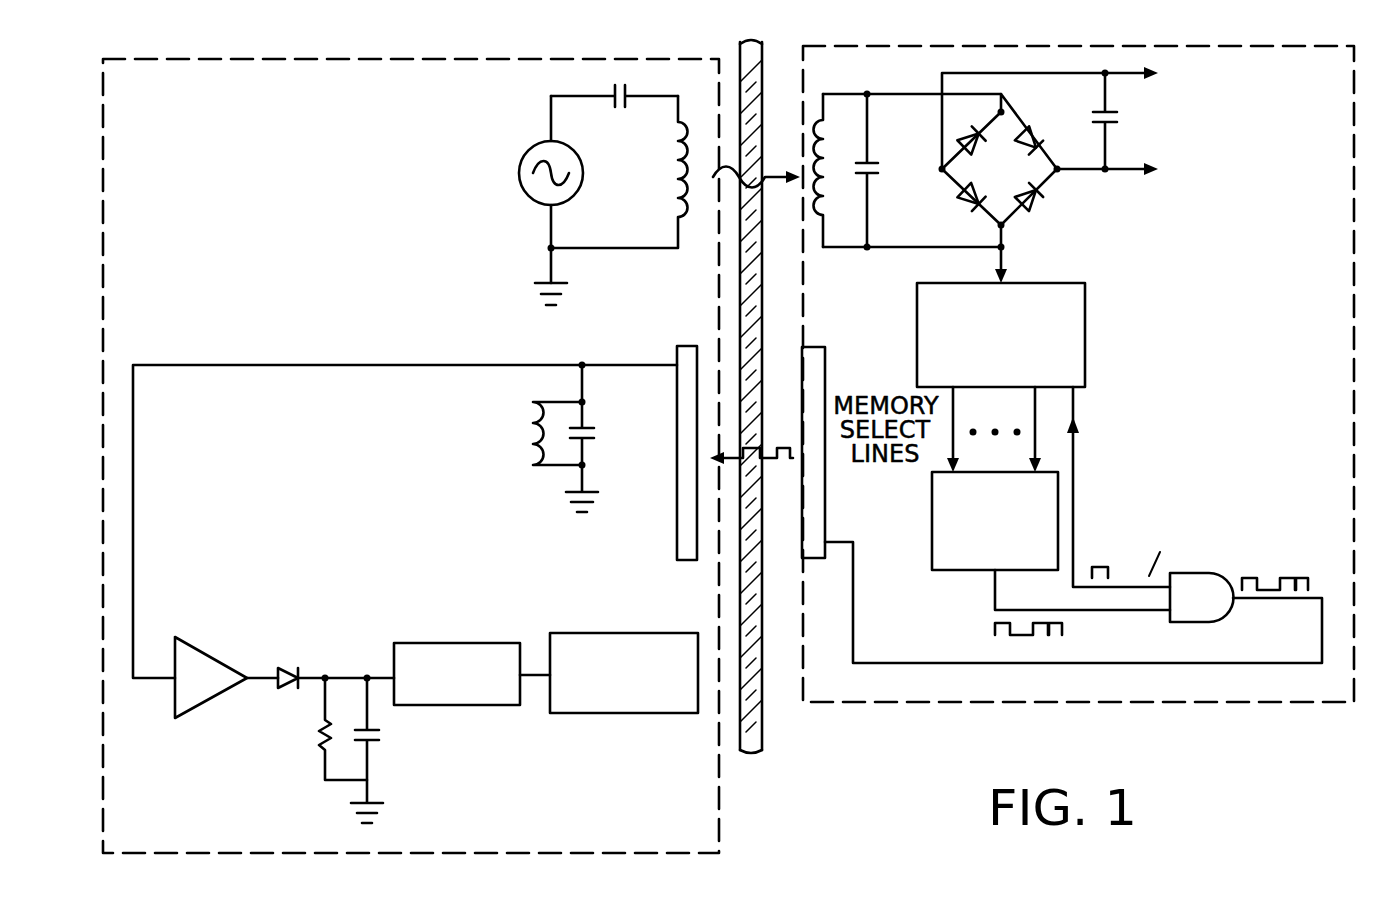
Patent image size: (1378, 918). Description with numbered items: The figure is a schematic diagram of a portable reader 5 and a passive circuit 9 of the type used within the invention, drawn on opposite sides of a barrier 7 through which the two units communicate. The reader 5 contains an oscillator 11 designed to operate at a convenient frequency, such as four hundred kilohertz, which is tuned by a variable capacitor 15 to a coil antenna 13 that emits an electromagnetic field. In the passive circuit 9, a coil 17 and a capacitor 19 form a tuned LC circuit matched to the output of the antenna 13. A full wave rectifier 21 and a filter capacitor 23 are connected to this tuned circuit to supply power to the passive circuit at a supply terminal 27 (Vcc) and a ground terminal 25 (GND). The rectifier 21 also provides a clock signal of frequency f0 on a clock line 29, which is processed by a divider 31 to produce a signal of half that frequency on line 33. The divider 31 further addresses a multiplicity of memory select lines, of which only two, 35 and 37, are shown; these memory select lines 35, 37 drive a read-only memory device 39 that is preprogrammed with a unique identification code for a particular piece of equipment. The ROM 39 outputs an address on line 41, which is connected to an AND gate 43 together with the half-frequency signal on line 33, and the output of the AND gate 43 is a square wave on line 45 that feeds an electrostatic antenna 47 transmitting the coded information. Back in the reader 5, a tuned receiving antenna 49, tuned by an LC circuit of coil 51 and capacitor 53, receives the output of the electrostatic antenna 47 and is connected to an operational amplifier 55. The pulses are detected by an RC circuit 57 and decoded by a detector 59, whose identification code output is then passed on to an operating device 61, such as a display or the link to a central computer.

The portable reader 5 is at (558, 52).
The barrier wall 7 is at (745, 38).
The passive circuit 9 is at (876, 44).
The oscillator 11 is at (524, 163).
The coil antenna 13 is at (686, 170).
The variable capacitor 15 is at (628, 89).
The coil 17 is at (819, 157).
The capacitor 19 is at (897, 158).
The full wave rectifier 21 is at (1011, 118).
The filter capacitor 23 is at (1122, 118).
The ground terminal 25 is at (1122, 78).
The VCC supply terminal 27 is at (1122, 178).
The clock line 29 is at (1000, 259).
The divider 31 is at (1088, 328).
The line 33 is at (1076, 520).
The memory select line 35 is at (954, 419).
The memory select line 37 is at (1036, 441).
The read-only memory (ROM) device 39 is at (932, 545).
The line 41 is at (992, 598).
The AND gate 43 is at (1210, 573).
The line 45 is at (1300, 601).
The electrostatic antenna 47 is at (827, 522).
The tuned receiving antenna 49 is at (677, 555).
The coil 51 is at (531, 440).
The capacitor 53 is at (596, 436).
The operational amplifier 55 is at (210, 656).
The RC circuit 57 is at (326, 678).
The detector 59 is at (427, 643).
The operating device 61 is at (601, 633).